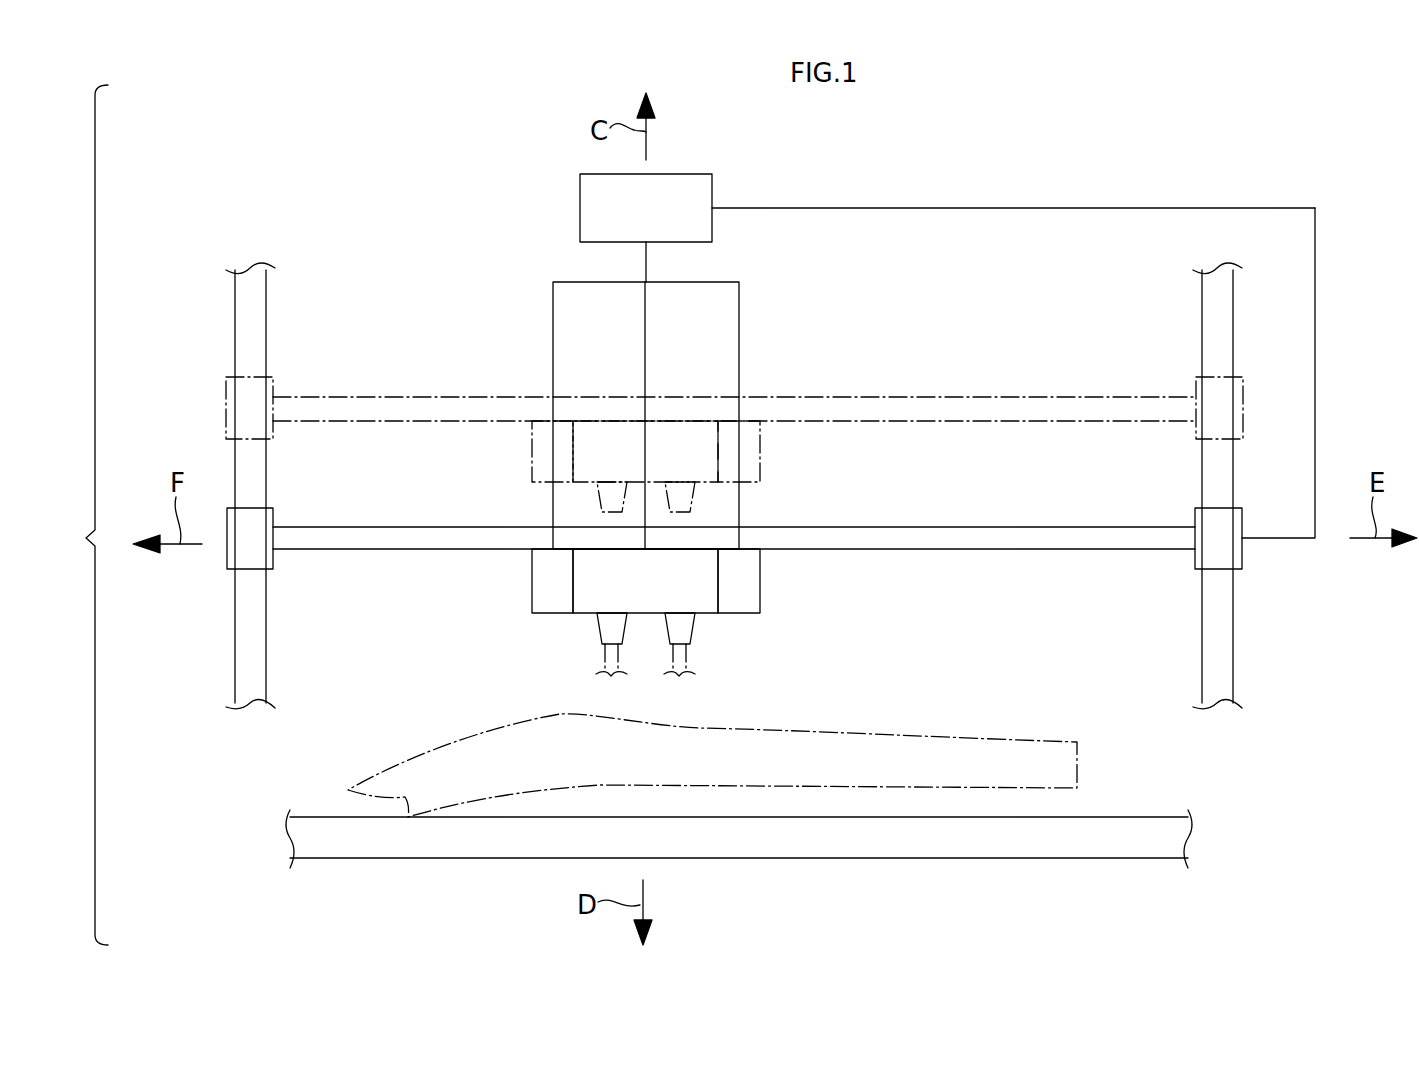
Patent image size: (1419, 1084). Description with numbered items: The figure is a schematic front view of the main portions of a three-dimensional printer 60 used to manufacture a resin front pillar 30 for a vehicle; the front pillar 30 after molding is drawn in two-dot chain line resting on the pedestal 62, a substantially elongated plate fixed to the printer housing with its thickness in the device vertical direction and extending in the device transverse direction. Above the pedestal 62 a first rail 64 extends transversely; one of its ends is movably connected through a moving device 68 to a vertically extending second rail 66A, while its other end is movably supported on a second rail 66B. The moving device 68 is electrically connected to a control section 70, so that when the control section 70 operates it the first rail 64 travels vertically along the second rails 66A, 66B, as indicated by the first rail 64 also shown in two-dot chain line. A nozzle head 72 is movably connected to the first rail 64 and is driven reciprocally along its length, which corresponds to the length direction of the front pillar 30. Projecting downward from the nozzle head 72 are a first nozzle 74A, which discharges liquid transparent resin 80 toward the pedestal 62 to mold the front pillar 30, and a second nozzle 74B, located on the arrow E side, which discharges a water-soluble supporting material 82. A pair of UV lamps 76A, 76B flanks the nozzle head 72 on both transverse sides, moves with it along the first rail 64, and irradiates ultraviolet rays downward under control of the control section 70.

The 3D printer 60 is at (390, 220).
The control section 70 is at (712, 186).
The nozzle head 72 is at (690, 428).
The first nozzle 74A is at (597, 507).
The second nozzle 74B is at (690, 505).
The UV lamp 76A is at (531, 445).
The UV lamp 76B is at (760, 450).
The first rail 64 is at (368, 423).
The moving device 68 is at (1243, 385).
The second rail 66A is at (1235, 604).
The second rail 66B is at (268, 645).
The transparent resin 80 is at (597, 664).
The supporting material 82 is at (688, 664).
The front pillar 30 is at (877, 718).
The pedestal 62 is at (318, 817).